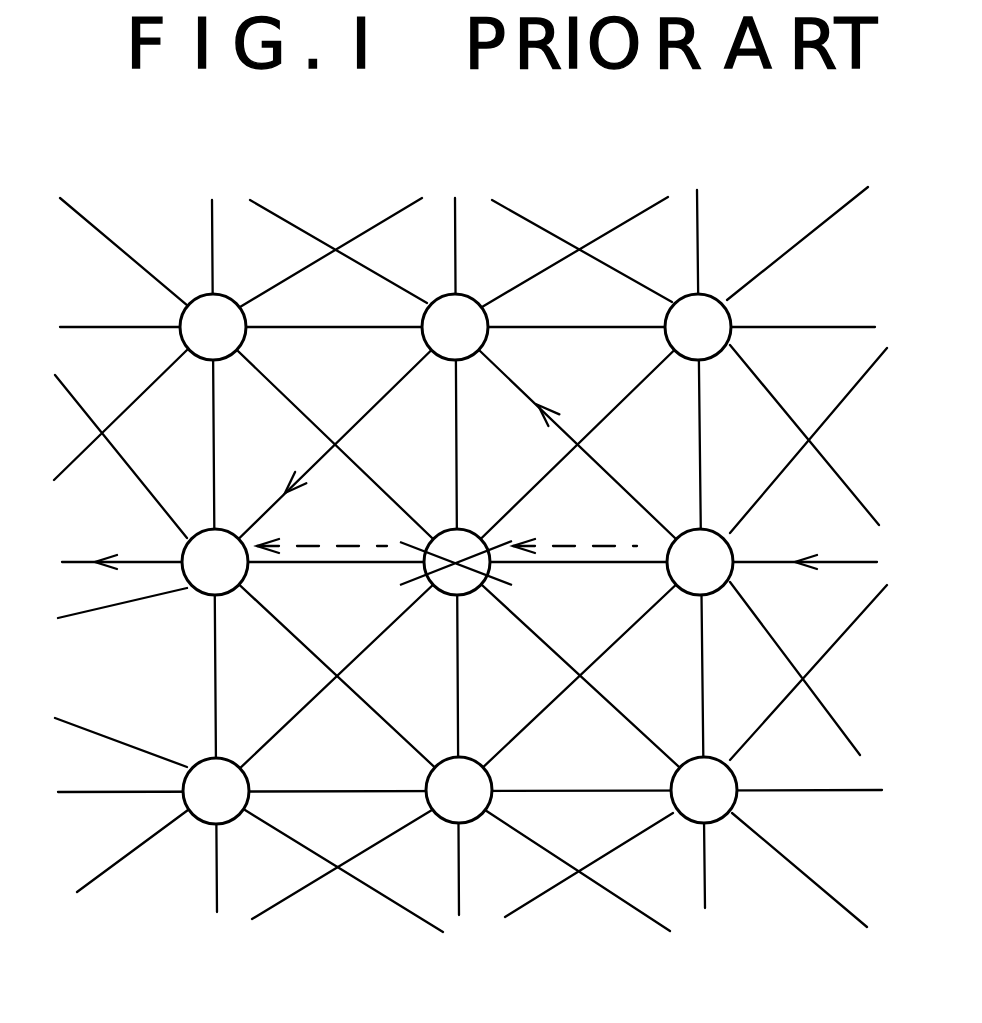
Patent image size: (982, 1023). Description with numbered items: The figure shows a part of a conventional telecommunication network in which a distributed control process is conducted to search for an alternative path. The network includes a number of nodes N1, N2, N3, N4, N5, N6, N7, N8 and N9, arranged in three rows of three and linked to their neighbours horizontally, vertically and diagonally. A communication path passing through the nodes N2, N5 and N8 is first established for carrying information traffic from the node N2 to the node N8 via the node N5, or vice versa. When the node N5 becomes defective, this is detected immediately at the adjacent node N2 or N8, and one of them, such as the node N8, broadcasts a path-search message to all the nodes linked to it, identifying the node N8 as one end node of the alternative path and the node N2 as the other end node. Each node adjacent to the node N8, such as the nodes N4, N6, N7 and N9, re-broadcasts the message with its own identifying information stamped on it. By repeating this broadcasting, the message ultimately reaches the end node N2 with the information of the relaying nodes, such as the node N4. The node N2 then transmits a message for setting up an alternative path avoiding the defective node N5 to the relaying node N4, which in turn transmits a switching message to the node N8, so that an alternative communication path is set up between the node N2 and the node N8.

The node N1 is at (698, 327).
The node N2 is at (700, 562).
The node N3 is at (704, 790).
The node N4 is at (455, 327).
The node N5 is at (456, 562).
The node N6 is at (459, 790).
The node N7 is at (213, 327).
The node N8 is at (215, 562).
The node N9 is at (216, 791).